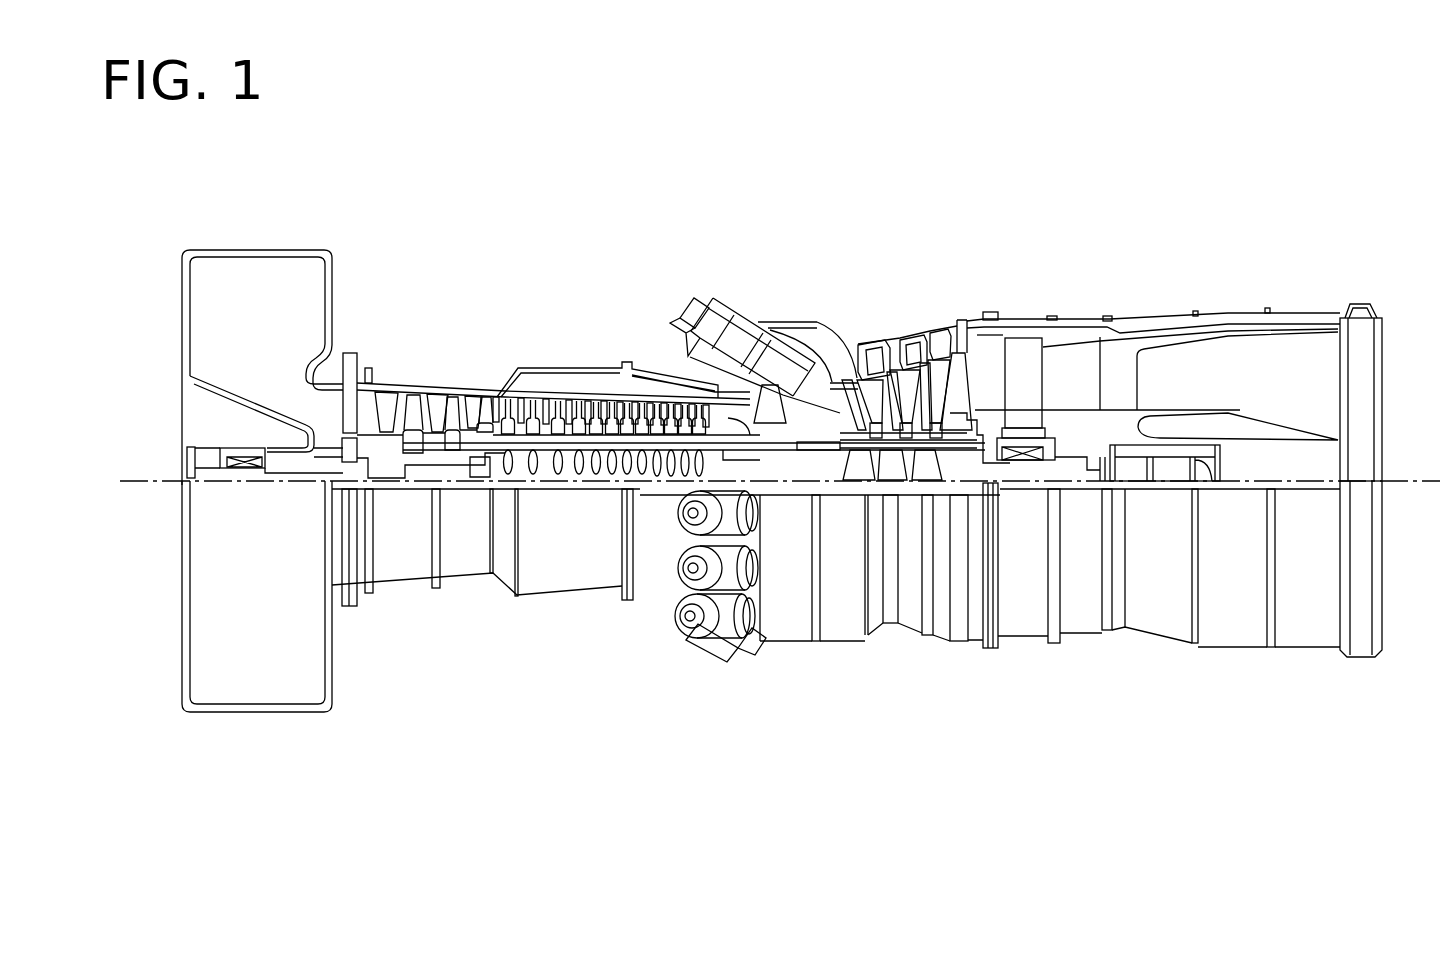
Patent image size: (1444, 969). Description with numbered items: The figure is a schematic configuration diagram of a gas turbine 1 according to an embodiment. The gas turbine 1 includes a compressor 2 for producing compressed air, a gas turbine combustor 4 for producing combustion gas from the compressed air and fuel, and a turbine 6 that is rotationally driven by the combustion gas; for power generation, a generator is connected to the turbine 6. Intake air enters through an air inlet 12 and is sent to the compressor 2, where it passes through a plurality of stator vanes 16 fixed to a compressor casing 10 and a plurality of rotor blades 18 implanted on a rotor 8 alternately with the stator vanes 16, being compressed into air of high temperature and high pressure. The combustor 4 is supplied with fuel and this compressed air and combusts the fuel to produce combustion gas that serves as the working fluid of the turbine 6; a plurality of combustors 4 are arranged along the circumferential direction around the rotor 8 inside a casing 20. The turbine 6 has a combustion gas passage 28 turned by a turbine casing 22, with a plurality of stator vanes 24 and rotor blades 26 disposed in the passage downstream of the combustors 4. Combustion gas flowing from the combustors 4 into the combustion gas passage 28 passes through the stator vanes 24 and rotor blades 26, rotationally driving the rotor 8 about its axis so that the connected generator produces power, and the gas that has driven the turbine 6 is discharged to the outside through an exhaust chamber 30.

The gas turbine 1 is at (800, 203).
The compressor 2 is at (432, 315).
The gas turbine combustor 4 is at (716, 285).
The turbine 6 is at (998, 298).
The rotor 8 is at (735, 418).
The compressor casing 10 is at (413, 390).
The air inlet 12 is at (215, 335).
The stator vanes 16 is at (432, 398).
The rotor blades 18 is at (389, 394).
The casing 20 is at (690, 328).
The turbine casing 22 is at (925, 336).
The stator vanes 24 is at (785, 328).
The rotor blades 26 is at (851, 366).
The combustion gas passage 28 is at (910, 337).
The exhaust chamber 30 is at (1301, 316).